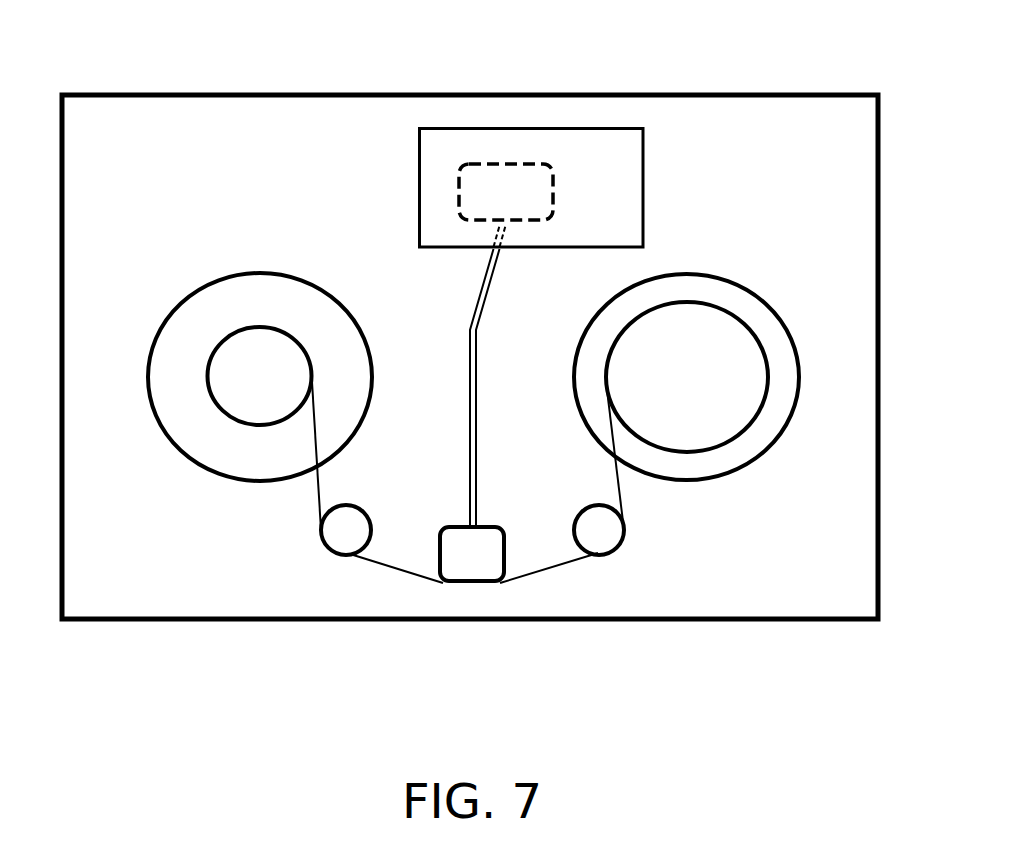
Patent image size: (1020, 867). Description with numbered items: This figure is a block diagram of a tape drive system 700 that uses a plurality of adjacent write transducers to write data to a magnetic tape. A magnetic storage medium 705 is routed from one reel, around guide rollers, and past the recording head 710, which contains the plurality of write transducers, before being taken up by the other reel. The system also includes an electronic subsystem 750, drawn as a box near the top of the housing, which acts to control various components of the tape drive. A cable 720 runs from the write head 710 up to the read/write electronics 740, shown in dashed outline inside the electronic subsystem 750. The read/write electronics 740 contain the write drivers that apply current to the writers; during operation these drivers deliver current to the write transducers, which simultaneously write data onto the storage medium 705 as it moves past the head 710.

The tape drive system 700 is at (795, 672).
The magnetic storage medium 705 is at (550, 572).
The recording head 710 is at (475, 584).
The cable 720 is at (468, 440).
The read/write electronics 740 is at (505, 162).
The electronic subsystem 750 is at (418, 145).